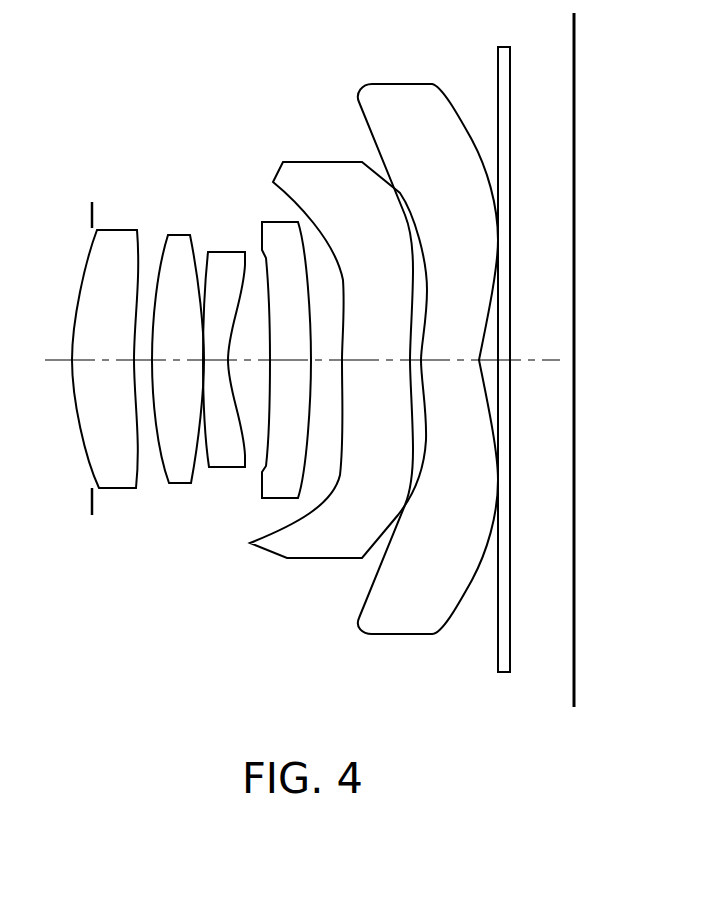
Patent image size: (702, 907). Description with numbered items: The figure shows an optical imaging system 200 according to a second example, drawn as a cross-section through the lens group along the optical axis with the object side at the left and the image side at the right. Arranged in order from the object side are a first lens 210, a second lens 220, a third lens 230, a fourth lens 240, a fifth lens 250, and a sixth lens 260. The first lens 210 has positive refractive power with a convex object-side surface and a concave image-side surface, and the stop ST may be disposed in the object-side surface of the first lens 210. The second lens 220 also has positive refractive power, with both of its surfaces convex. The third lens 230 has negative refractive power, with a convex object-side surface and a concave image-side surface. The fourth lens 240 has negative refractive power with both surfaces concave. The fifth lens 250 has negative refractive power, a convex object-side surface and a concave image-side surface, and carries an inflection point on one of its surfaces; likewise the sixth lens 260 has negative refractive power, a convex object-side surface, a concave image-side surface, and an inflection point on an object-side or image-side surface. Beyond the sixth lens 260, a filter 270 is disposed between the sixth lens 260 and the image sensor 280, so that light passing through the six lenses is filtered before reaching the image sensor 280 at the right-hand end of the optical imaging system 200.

The optical imaging system 200 is at (199, 95).
The stop ST is at (92, 212).
The first lens 210 is at (107, 489).
The second lens 220 is at (183, 484).
The third lens 230 is at (228, 468).
The fourth lens 240 is at (265, 499).
The fifth lens 250 is at (308, 559).
The sixth lens 260 is at (388, 635).
The filter 270 is at (497, 660).
The image sensor 280 is at (574, 680).